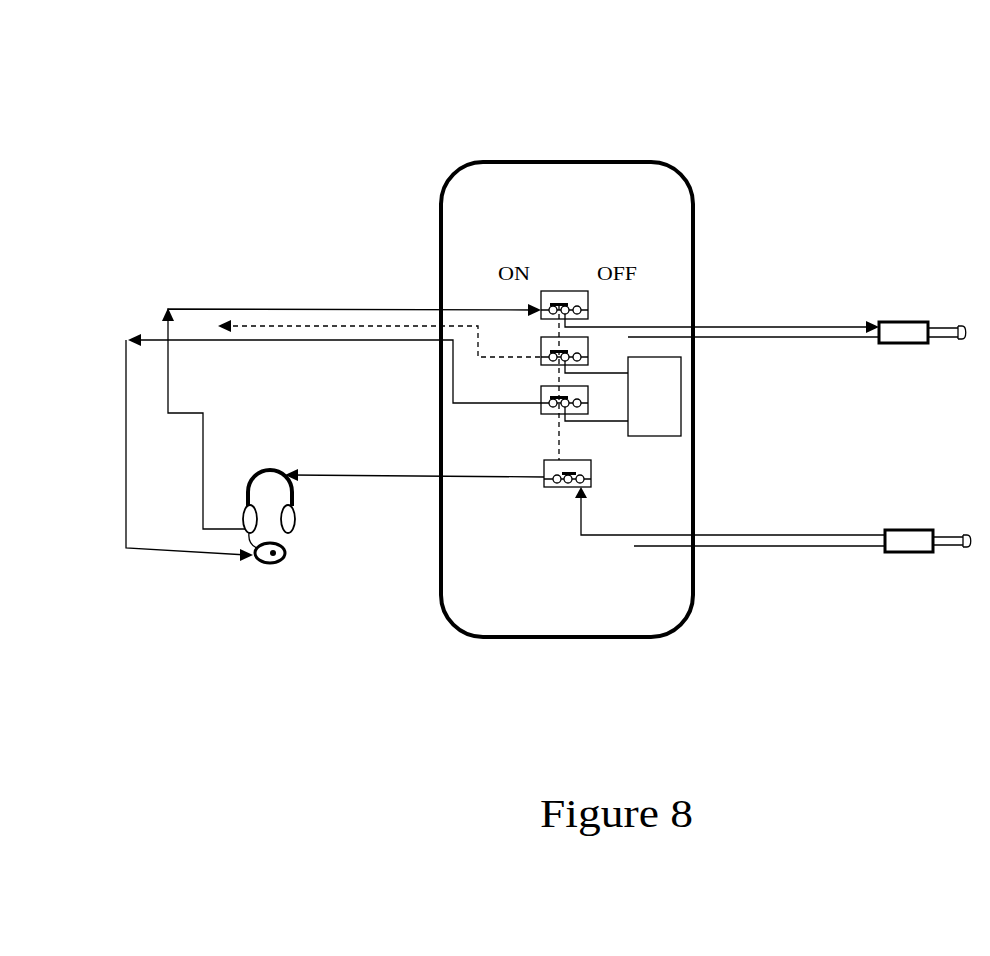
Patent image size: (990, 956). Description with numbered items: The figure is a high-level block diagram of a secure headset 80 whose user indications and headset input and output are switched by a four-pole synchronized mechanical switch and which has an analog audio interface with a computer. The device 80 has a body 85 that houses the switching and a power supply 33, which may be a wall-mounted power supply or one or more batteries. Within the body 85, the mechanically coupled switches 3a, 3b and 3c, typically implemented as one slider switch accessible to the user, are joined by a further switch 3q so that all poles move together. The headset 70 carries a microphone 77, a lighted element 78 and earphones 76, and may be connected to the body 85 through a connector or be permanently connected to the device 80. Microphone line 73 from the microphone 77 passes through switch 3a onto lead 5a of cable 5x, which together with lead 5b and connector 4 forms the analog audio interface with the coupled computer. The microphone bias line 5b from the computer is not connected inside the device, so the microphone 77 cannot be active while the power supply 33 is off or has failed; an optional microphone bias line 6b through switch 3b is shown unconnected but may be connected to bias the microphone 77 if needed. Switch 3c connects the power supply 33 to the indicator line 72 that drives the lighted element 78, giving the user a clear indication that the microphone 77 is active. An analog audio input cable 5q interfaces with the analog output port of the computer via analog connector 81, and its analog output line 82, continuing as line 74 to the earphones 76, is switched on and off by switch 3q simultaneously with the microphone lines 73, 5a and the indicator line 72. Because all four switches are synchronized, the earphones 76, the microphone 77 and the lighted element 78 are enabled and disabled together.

The secure headset 80 is at (304, 116).
The body 85 is at (693, 212).
The switch 3a is at (574, 288).
The switch 3b is at (541, 338).
The switch 3c is at (541, 387).
The switch 3q is at (544, 462).
The power supply 33 is at (681, 402).
The lead 5a is at (792, 328).
The microphone bias line 5b is at (792, 340).
The cable 5x is at (838, 302).
The connector 4 is at (903, 343).
The analog audio input cable 5q is at (742, 521).
The analog output line 82 is at (873, 532).
The analog connector 81 is at (898, 552).
The microphone bias line 6b is at (310, 327).
The microphone line 73 is at (203, 437).
The indicator line 72 is at (126, 522).
The analog output line 74 is at (333, 475).
The headset 70 is at (363, 559).
The earphones 76 is at (297, 517).
The microphone 77 is at (286, 548).
The lighted element 78 is at (268, 567).